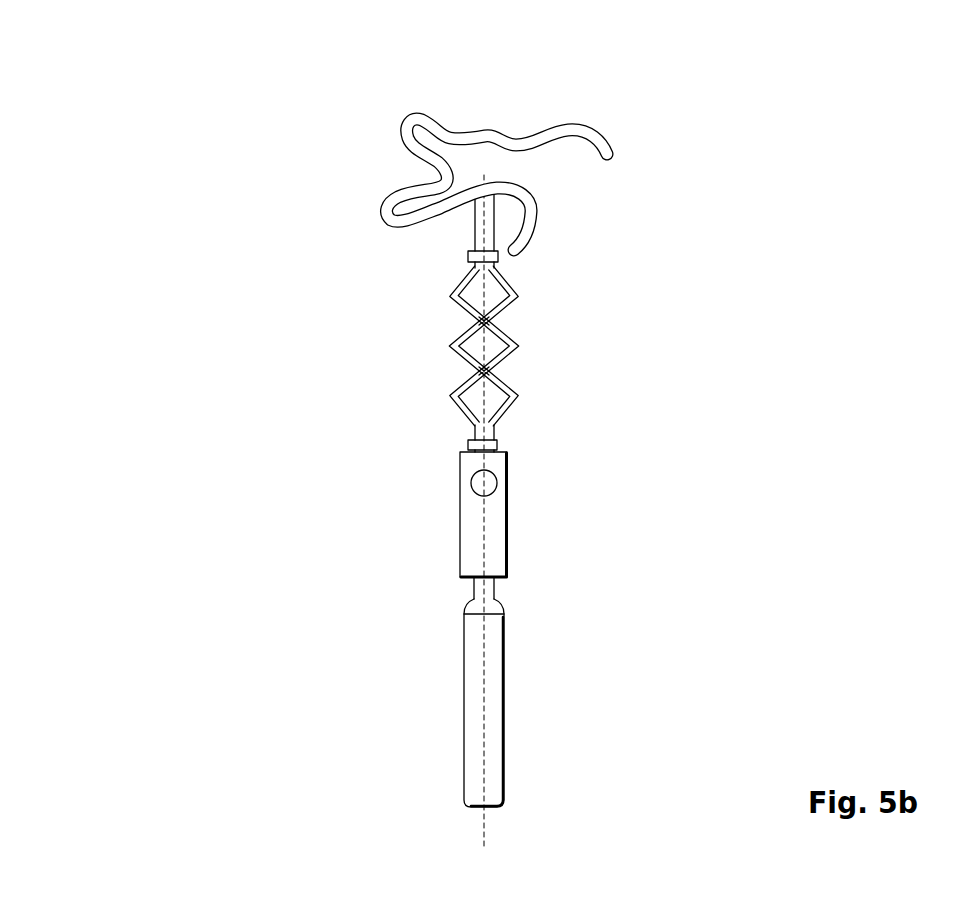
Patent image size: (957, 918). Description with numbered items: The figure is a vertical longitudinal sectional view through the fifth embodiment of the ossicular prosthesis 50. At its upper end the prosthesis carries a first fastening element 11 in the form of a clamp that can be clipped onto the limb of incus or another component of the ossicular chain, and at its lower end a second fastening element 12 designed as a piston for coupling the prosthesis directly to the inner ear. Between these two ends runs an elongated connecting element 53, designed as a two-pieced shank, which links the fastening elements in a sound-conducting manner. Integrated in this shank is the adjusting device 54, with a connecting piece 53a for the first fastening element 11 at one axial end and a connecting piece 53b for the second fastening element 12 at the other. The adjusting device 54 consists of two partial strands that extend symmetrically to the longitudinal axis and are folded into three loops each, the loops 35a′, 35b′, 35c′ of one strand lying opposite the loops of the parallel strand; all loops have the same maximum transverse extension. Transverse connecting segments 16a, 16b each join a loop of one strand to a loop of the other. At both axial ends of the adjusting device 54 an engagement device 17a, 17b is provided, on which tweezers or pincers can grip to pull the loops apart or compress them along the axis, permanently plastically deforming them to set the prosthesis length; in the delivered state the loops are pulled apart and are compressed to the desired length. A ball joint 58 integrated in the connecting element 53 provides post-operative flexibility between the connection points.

The ossicular prosthesis 50 is at (310, 118).
The first fastening element 11 is at (597, 132).
The second fastening element 12 is at (470, 770).
The connecting element 53 is at (103, 207).
The connecting piece 53a is at (479, 225).
The connecting piece 53b is at (470, 590).
The engagement device 17a is at (468, 255).
The engagement device 17b is at (476, 443).
The adjusting device 54 is at (266, 280).
The connecting segment 16a is at (486, 320).
The connecting segment 16b is at (490, 378).
The loop 35a′ is at (452, 298).
The loop 35b′ is at (452, 346).
The loop 35c′ is at (452, 396).
The ball joint 58 is at (477, 490).